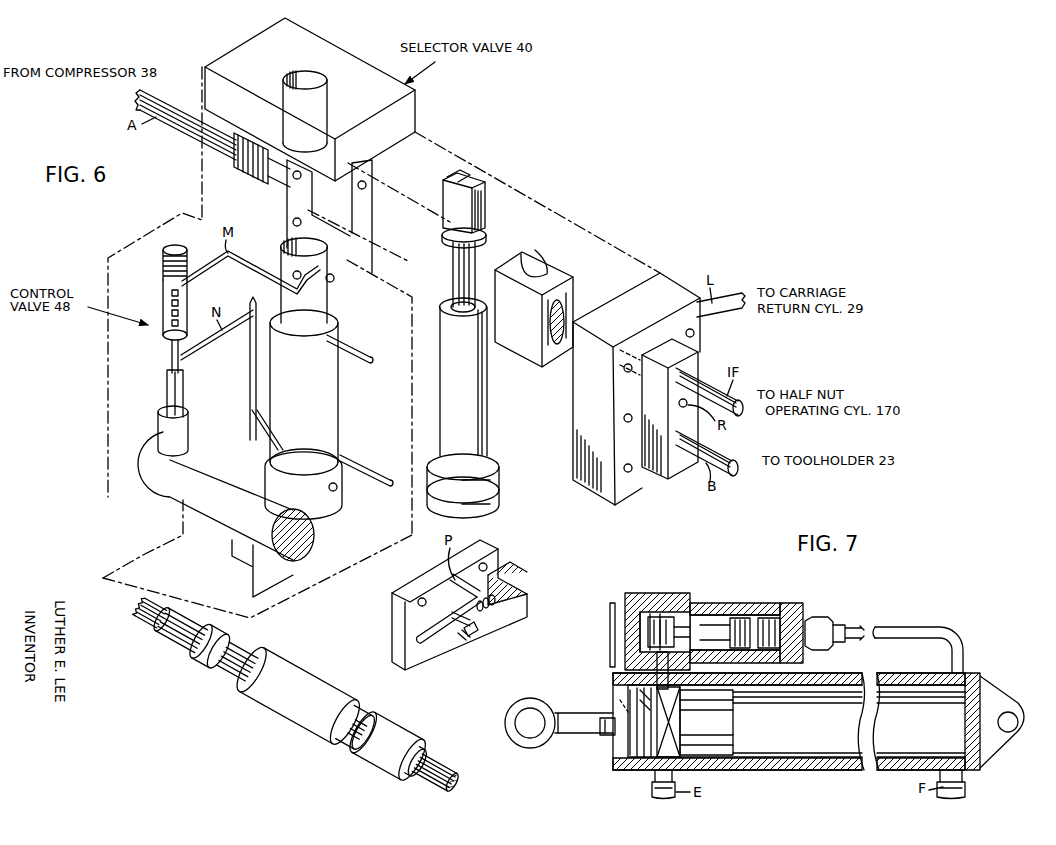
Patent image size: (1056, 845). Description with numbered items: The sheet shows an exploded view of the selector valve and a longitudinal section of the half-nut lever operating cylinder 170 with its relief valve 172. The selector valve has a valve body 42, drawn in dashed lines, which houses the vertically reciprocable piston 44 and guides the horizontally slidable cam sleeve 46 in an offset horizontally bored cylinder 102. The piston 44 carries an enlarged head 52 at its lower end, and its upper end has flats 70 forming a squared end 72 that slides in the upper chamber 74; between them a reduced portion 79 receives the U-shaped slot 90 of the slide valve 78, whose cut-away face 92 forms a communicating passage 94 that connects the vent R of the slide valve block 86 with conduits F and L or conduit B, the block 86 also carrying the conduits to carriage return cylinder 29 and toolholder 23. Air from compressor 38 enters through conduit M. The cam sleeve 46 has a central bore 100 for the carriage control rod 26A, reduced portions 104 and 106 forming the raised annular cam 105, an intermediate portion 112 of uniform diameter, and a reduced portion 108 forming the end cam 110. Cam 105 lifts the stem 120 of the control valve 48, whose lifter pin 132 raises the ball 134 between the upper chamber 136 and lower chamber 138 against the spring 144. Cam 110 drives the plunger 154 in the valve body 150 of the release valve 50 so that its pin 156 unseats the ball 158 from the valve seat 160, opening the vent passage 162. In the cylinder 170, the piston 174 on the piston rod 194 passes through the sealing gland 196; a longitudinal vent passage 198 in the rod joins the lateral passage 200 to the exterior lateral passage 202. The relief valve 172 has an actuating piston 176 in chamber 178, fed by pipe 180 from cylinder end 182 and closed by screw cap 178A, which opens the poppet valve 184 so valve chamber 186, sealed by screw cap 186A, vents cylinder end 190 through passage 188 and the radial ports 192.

In FIG. 6, the compressor supply line 38 is at (212, 138).
In FIG. 6, the valve body 42 is at (417, 104).
In FIG. 6, the selector valve piston 44 is at (492, 418).
In FIG. 6, the cam sleeve 46 is at (300, 695).
In FIG. 6, the control valve 48 is at (173, 331).
In FIG. 6, the release valve 50 is at (477, 610).
In FIG. 6, the enlarged head 52 is at (495, 500).
In FIG. 6, the flats 70 is at (472, 203).
In FIG. 6, the squared end 72 is at (487, 187).
In FIG. 6, the upper chamber 74 is at (317, 82).
In FIG. 6, the slide valve 78 is at (554, 277).
In FIG. 6, the reduced portion 79 is at (454, 272).
In FIG. 6, the slide valve block 86 is at (658, 290).
In FIG. 6, the U-shaped slot 90 is at (536, 272).
In FIG. 6, the face 92 is at (566, 290).
In FIG. 6, the communicating passage 94 is at (563, 310).
In FIG. 6, the central bore 100 is at (417, 763).
In FIG. 6, the horizontally bored cylinder 102 is at (290, 552).
In FIG. 6, the reduced diameter portion 104 is at (179, 628).
In FIG. 6, the raised annular cam 105 is at (210, 646).
In FIG. 6, the reduced diameter portion 106 is at (237, 661).
In FIG. 6, the reduced portion 108 is at (357, 728).
In FIG. 6, the annular cam 110 is at (387, 745).
In FIG. 6, the intermediate portion 112 is at (298, 695).
In FIG. 6, the stem 120 is at (160, 432).
In FIG. 6, the lifter pin 132 is at (170, 362).
In FIG. 6, the ball 134 is at (164, 338).
In FIG. 6, the upper chamber 136 is at (168, 296).
In FIG. 6, the lower chamber 138 is at (184, 370).
In FIG. 6, the spring 144 is at (179, 312).
In FIG. 6, the valve body 150 is at (522, 580).
In FIG. 6, the plunger 154 is at (420, 642).
In FIG. 6, the pin 156 is at (458, 620).
In FIG. 6, the ball 158 is at (485, 615).
In FIG. 6, the valve seat 160 is at (472, 630).
In FIG. 6, the vent passage 162 is at (463, 643).
In FIG. 6, the half-nut lever operating cylinder 170 is at (709, 392).
In FIG. 7, the half-nut lever operating cylinder 170 is at (851, 772).
In FIG. 7, the relief valve 172 is at (699, 574).
In FIG. 7, the piston 174 is at (735, 750).
In FIG. 7, the valve actuating piston 176 is at (757, 620).
In FIG. 7, the chamber 178 is at (783, 618).
In FIG. 7, the screw cap 178A is at (808, 612).
In FIG. 7, the pipe 180 is at (877, 627).
In FIG. 7, the cylinder end 182 is at (966, 693).
In FIG. 7, the poppet valve 184 is at (668, 614).
In FIG. 7, the valve chamber 186 is at (648, 606).
In FIG. 7, the screw cap 186A is at (612, 612).
In FIG. 7, the passage 188 is at (620, 655).
In FIG. 7, the cylinder end 190 is at (682, 760).
In FIG. 7, the radial ports 192 is at (702, 622).
In FIG. 7, the piston rod 194 is at (585, 714).
In FIG. 7, the sealing gland 196 is at (638, 762).
In FIG. 7, the longitudinal vent passage 198 is at (622, 700).
In FIG. 7, the lateral passage 200 is at (678, 722).
In FIG. 7, the exterior lateral passage 202 is at (607, 733).
In FIG. 6, the carriage control rod 26A is at (436, 773).
In FIG. 6, the carriage return cylinder line 29 is at (721, 305).
In FIG. 6, the toolholder line 23 is at (707, 453).